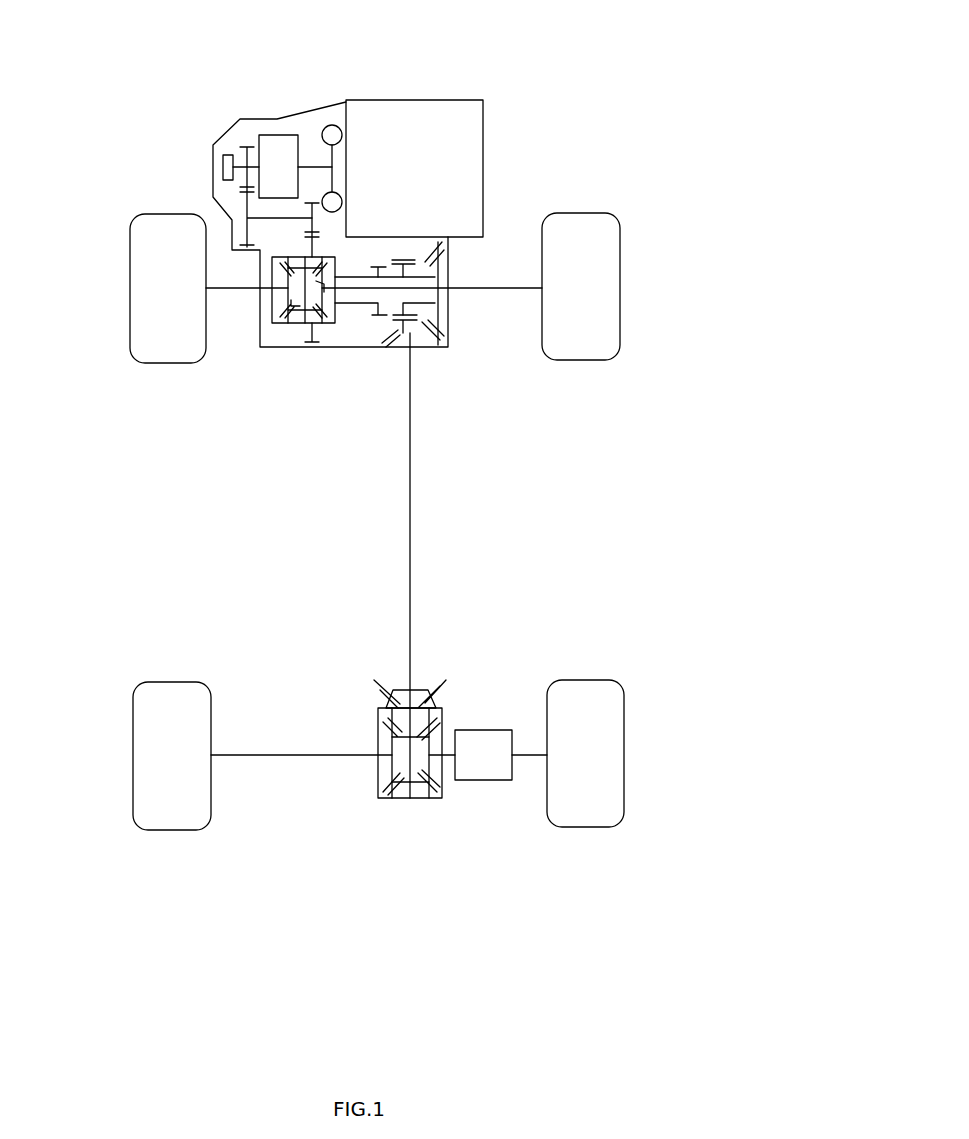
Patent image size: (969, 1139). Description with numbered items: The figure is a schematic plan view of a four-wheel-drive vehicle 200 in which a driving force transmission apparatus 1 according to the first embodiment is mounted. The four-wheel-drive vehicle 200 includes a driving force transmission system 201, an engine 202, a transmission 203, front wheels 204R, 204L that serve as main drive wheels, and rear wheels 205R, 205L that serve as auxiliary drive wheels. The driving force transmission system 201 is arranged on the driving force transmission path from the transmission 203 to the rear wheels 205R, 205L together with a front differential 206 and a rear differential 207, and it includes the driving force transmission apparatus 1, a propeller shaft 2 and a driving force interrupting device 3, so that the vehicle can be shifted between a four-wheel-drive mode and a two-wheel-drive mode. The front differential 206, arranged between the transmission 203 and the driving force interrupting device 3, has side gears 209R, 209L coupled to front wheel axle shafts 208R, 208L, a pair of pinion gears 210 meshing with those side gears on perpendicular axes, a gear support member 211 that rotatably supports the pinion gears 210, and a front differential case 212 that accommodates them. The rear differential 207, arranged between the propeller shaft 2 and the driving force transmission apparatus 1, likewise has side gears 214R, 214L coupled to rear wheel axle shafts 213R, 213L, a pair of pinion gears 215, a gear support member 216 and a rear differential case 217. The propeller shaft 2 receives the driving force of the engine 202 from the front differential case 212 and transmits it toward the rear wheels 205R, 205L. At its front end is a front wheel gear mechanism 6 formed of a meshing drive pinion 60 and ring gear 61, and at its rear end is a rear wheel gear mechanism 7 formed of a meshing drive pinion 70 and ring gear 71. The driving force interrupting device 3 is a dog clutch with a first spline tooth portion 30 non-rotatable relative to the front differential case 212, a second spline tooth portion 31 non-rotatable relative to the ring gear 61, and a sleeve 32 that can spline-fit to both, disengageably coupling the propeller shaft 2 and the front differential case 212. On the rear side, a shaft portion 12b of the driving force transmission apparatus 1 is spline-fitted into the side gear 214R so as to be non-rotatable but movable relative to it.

The four-wheel-drive vehicle 200 is at (548, 47).
The driving force transmission system 201 is at (549, 450).
The engine 202 is at (394, 100).
The transmission 203 is at (268, 114).
The front wheel 204L is at (130, 285).
The front wheel 204R is at (620, 282).
The rear wheel 205L is at (133, 755).
The rear wheel 205R is at (624, 752).
The front differential 206 is at (273, 326).
The rear differential 207 is at (410, 782).
The front wheel axle shaft 208L is at (250, 287).
The front wheel axle shaft 208R is at (485, 288).
The side gear 209L is at (272, 302).
The side gear 209R is at (333, 324).
The pinion gear 210 is at (302, 272).
The gear support member 211 is at (302, 326).
The front differential case 212 is at (328, 328).
The rear wheel axle shaft 213L is at (260, 758).
The rear wheel axle shaft 213R is at (527, 758).
The side gear 214L is at (397, 771).
The side gear 214R is at (433, 745).
The pinion gear 215 is at (428, 721).
The gear support member 216 is at (407, 755).
The rear differential case 217 is at (429, 798).
The shaft portion 12b is at (447, 758).
The driving force transmission apparatus 1 is at (480, 815).
The propeller shaft 2 is at (411, 525).
The driving force interrupting device 3 is at (424, 258).
The first spline tooth portion 30 is at (375, 273).
The second spline tooth portion 31 is at (445, 314).
The sleeve 32 is at (399, 259).
The front wheel gear mechanism 6 is at (455, 354).
The drive pinion 60 is at (420, 340).
The ring gear 61 is at (433, 318).
The rear wheel gear mechanism 7 is at (443, 663).
The drive pinion 70 is at (428, 690).
The ring gear 71 is at (383, 697).